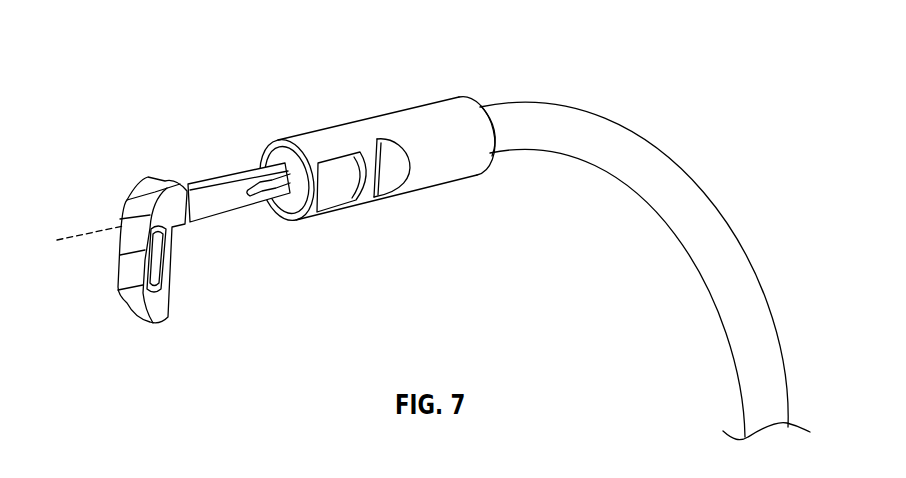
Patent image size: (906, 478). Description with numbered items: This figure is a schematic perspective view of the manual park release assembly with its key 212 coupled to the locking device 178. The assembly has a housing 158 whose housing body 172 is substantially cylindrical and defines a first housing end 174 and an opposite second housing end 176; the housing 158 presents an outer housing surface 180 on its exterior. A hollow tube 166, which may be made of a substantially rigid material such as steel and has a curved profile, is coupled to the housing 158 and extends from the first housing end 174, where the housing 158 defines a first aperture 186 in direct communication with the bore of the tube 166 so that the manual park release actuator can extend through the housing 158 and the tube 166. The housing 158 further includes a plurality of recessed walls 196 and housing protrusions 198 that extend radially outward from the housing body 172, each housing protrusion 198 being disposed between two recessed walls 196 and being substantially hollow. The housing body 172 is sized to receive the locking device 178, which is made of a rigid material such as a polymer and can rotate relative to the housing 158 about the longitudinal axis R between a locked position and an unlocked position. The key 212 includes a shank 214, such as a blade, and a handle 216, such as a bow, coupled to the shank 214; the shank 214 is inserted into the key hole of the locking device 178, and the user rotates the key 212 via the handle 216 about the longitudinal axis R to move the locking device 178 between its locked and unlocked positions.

The housing 158 is at (373, 166).
The tube 166 is at (664, 151).
The housing body 172 is at (455, 172).
The first housing end 174 is at (478, 104).
The second housing end 176 is at (274, 144).
The locking device 178 is at (285, 220).
The outer housing surface 180 is at (386, 143).
The first aperture 186 is at (281, 226).
The recessed walls 196 is at (328, 204).
The housing protrusion 198 is at (378, 200).
The key 212 is at (212, 165).
The shank 214 is at (158, 266).
The handle 216 is at (158, 321).
The longitudinal axis R is at (117, 223).